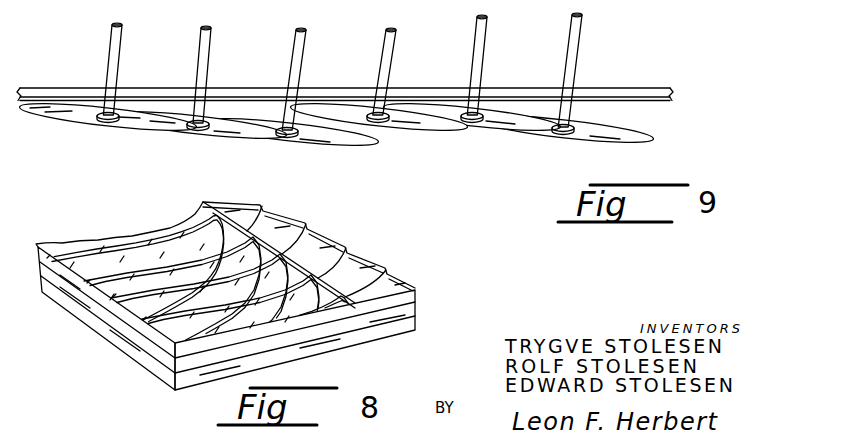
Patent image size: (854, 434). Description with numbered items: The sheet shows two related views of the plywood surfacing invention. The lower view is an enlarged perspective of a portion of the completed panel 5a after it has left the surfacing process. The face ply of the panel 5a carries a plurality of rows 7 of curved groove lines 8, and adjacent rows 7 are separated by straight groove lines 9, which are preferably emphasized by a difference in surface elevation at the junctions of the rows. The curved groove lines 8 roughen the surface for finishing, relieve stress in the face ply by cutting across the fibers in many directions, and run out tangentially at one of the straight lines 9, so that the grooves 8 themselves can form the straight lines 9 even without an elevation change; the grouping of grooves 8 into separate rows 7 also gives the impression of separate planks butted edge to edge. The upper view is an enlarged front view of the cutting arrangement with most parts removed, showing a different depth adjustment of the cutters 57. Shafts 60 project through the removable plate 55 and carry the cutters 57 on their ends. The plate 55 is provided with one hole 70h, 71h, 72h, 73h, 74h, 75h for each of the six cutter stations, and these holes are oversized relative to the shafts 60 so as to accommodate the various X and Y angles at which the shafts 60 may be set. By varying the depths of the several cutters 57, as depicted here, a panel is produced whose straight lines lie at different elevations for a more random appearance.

In FIG. 8, the completed panel 5a is at (235, 274).
In FIG. 8, the rows 7 is at (133, 234).
In FIG. 8, the curved groove lines 8 is at (200, 263).
In FIG. 8, the straight groove lines 9 is at (202, 217).
In FIG. 9, the plate 55 is at (657, 100).
In FIG. 9, the cutters 57 is at (511, 137).
In FIG. 9, the shafts 60 is at (363, 75).
In FIG. 9, the hole 70h is at (122, 97).
In FIG. 9, the hole 71h is at (213, 97).
In FIG. 9, the hole 72h is at (304, 97).
In FIG. 9, the hole 73h is at (397, 97).
In FIG. 9, the hole 74h is at (491, 97).
In FIG. 9, the hole 75h is at (581, 97).